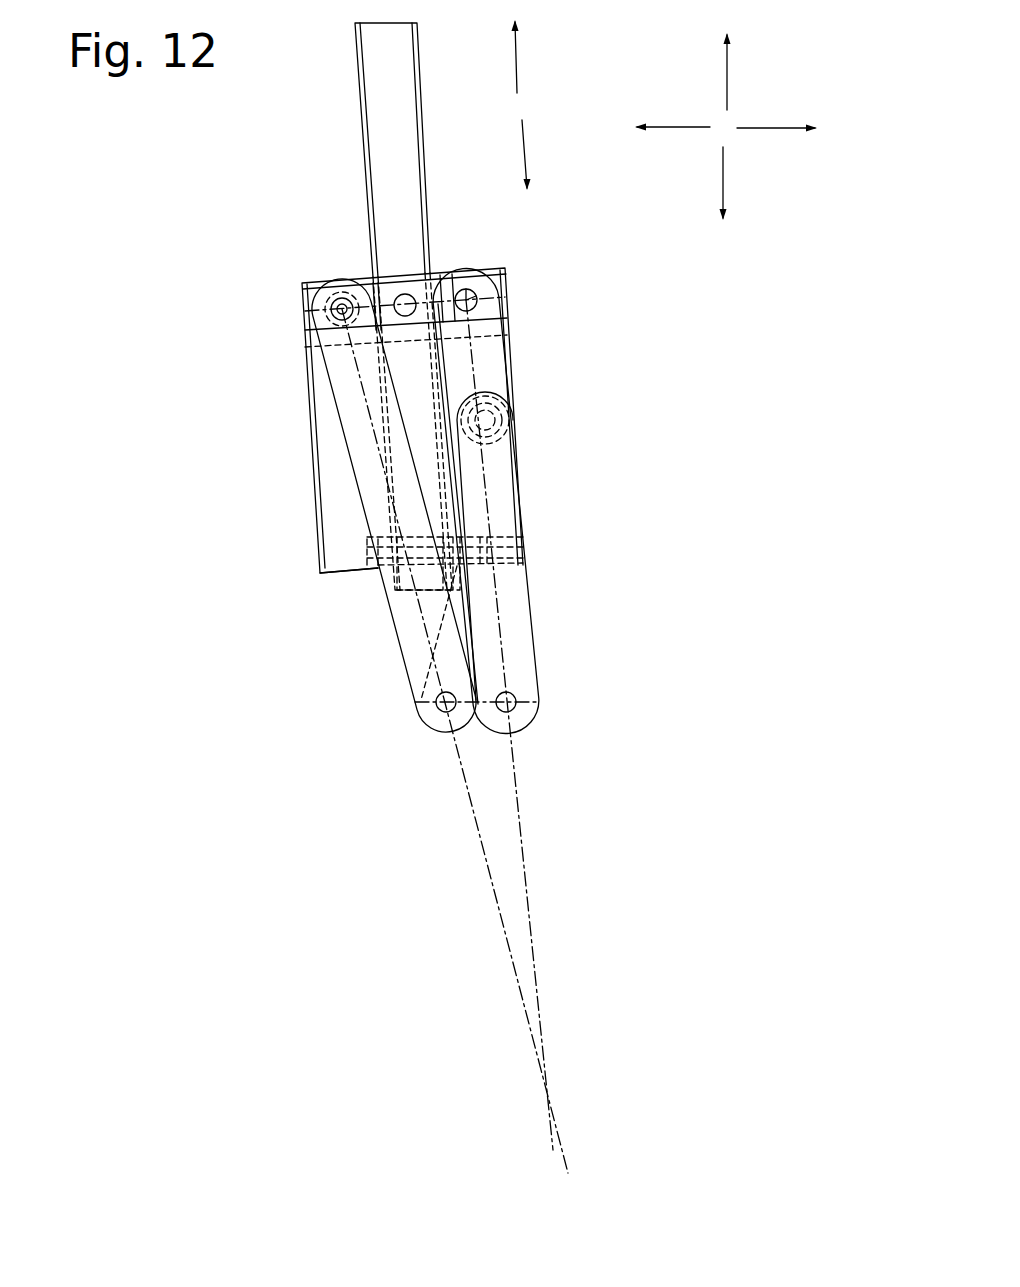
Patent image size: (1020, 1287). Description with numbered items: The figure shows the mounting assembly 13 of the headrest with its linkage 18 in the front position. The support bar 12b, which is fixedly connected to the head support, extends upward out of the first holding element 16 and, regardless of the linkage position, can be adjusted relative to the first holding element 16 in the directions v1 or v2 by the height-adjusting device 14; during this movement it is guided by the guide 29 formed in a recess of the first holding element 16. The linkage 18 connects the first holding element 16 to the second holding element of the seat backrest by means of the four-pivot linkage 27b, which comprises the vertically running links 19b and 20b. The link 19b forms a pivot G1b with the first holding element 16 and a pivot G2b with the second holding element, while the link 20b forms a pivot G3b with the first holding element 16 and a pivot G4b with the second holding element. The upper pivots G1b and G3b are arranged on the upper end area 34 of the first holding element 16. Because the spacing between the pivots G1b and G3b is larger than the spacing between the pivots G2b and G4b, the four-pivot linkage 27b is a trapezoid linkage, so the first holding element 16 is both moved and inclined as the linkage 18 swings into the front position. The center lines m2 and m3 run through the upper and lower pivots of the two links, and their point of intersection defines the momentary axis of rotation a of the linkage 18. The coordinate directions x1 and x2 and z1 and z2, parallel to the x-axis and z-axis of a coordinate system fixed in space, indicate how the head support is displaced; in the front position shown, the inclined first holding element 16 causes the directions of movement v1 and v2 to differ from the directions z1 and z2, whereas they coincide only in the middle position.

The support bar 12b is at (386, 160).
The mounting assembly 13 is at (515, 243).
The height-adjusting device 14 is at (367, 271).
The upper end area 34 is at (322, 282).
The first holding element 16 is at (335, 446).
The linkage 18 is at (533, 391).
The guide 29 is at (451, 275).
The four-pivot linkage 27b is at (370, 586).
The link 19b is at (407, 613).
The link 20b is at (514, 614).
The pivot G1b is at (330, 309).
The pivot G2b is at (440, 712).
The pivot G3b is at (477, 300).
The pivot G4b is at (533, 712).
The center line m2 is at (497, 913).
The center line m3 is at (527, 887).
The momentary axis of rotation a is at (548, 1092).
The direction of movement v1 is at (528, 56).
The direction of movement v2 is at (533, 155).
The direction x1 is at (672, 116).
The direction x2 is at (777, 117).
The direction z1 is at (736, 71).
The direction z2 is at (734, 183).